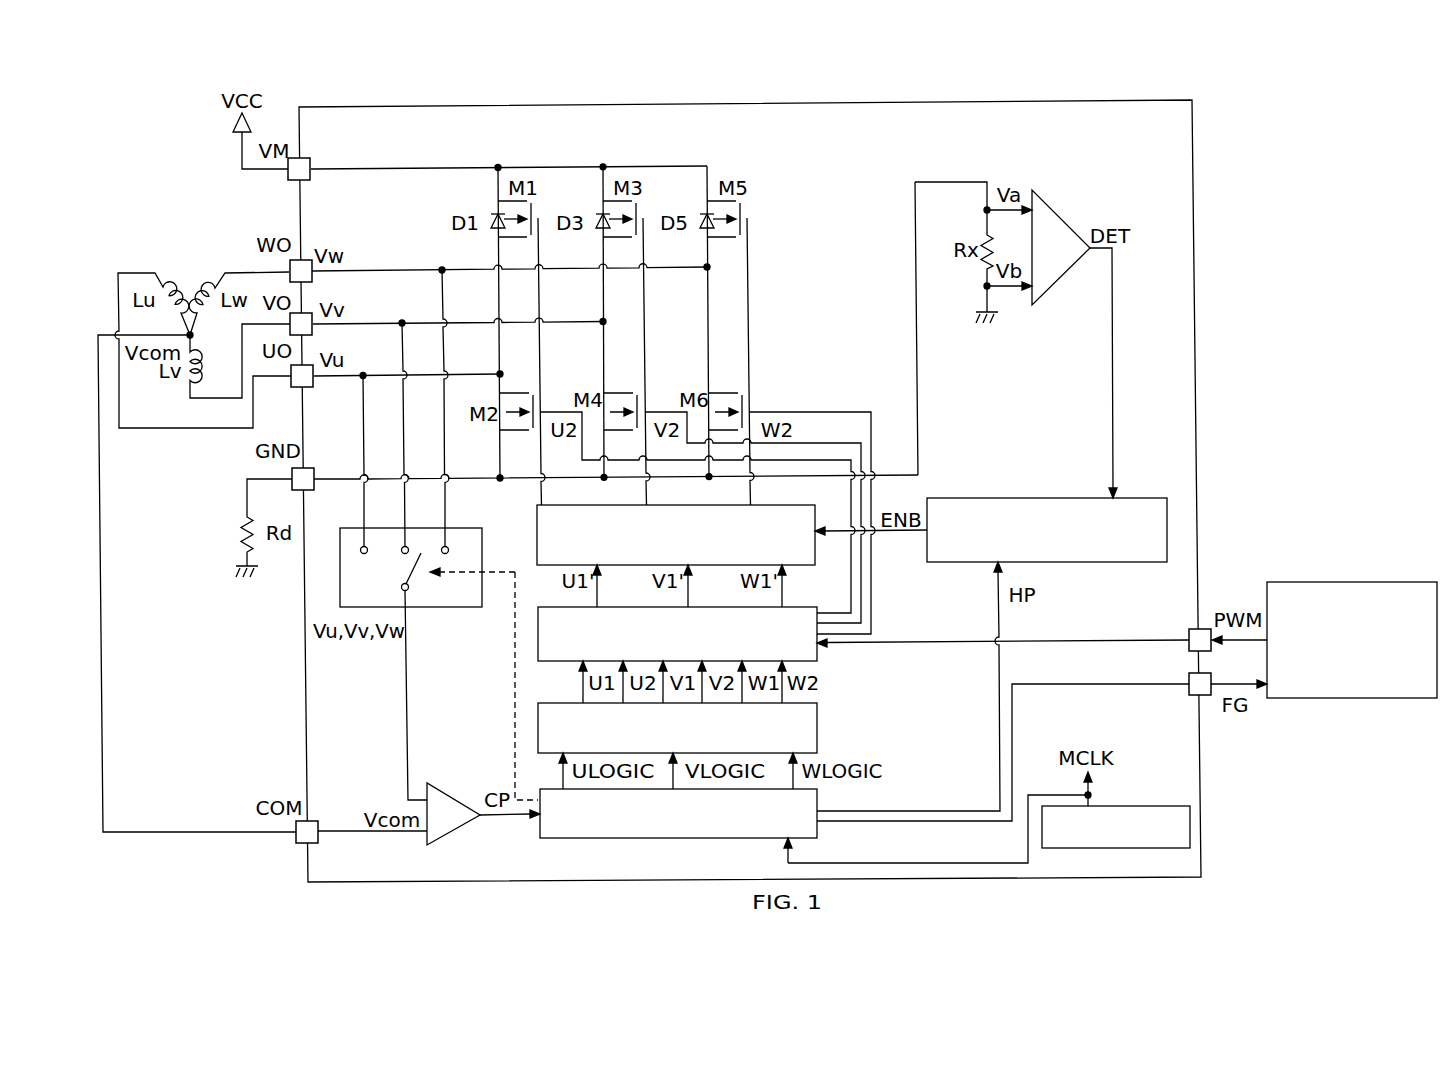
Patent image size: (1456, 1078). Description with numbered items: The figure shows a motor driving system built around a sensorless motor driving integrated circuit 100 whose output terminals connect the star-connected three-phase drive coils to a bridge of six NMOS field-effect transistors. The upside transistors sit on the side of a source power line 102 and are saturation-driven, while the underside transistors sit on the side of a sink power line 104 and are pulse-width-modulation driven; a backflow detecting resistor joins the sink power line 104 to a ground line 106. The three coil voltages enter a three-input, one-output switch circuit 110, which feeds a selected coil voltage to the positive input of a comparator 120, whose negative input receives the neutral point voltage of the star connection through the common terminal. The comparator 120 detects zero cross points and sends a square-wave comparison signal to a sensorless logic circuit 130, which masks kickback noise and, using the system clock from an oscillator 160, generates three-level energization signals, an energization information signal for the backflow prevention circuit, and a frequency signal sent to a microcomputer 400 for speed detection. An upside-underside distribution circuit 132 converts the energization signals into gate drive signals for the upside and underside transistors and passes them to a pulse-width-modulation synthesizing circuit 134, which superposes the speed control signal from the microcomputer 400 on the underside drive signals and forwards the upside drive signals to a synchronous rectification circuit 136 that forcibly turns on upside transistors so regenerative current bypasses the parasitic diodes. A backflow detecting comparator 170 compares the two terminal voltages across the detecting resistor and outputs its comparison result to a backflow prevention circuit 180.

The sensorless motor driving integrated circuit 100 is at (1194, 283).
The source power line 102 is at (378, 168).
The sink power line 104 is at (329, 478).
The ground line 106 is at (979, 312).
The switch circuit 110 is at (483, 559).
The comparator 120 is at (443, 785).
The sensorless logic circuit 130 is at (818, 790).
The upside-underside distribution circuit 132 is at (818, 725).
The PWM synthesizing circuit 134 is at (818, 650).
The synchronous rectification circuit 136 is at (798, 505).
The oscillator 160 is at (1113, 805).
The backflow detecting comparator 170 is at (1062, 212).
The backflow prevention circuit 180 is at (1007, 497).
The microcomputer 400 is at (1310, 582).